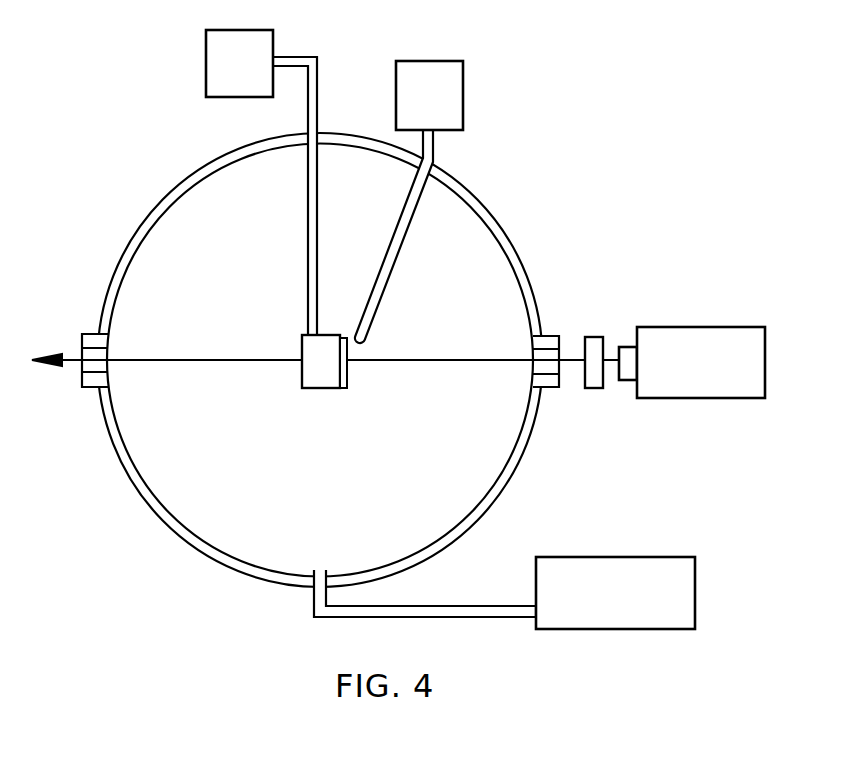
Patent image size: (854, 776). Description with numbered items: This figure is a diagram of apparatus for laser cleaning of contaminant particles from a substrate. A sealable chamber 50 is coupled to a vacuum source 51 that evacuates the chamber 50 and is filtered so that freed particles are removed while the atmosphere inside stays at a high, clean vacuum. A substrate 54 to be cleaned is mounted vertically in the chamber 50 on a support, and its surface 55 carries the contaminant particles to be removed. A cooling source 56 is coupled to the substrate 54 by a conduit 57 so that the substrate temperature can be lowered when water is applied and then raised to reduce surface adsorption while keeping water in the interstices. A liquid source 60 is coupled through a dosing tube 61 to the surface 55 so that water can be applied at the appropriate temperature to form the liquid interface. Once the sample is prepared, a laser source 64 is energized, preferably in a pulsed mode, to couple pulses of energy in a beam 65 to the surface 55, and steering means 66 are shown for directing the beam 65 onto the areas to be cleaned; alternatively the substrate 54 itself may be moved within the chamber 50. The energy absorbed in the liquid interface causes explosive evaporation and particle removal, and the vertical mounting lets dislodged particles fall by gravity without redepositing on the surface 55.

The sealable chamber 50 is at (505, 228).
The vacuum source 51 is at (628, 557).
The substrate 54 is at (337, 386).
The surface 55 is at (347, 380).
The cooling source 56 is at (273, 38).
The conduit 57 is at (308, 207).
The liquid source 60 is at (463, 88).
The dosing tube 61 is at (405, 236).
The laser source 64 is at (705, 327).
The beam 65 is at (478, 358).
The means for steering the beam 66 is at (598, 336).